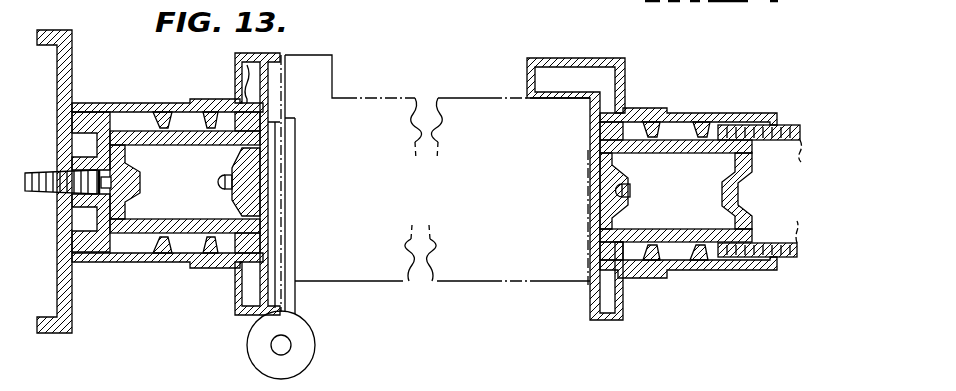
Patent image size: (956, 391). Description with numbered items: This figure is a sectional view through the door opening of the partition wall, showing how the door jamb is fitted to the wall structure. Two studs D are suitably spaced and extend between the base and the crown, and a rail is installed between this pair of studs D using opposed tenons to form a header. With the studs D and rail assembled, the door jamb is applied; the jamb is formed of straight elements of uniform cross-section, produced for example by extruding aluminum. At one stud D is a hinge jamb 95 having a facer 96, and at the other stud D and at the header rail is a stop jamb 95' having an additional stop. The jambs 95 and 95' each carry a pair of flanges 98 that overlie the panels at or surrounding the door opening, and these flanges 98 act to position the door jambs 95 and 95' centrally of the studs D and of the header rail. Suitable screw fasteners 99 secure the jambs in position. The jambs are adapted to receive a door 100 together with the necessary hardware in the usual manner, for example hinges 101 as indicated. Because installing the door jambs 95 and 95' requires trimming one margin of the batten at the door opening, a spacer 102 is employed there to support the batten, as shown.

The hinge jamb 95 is at (226, 187).
The stop jamb 95' is at (591, 205).
The facer 96 is at (265, 222).
The flanges 98 is at (210, 102).
The screw fasteners 99 is at (226, 180).
The door 100 is at (393, 282).
The hinges 101 is at (314, 357).
The spacer 102 is at (245, 70).
The stud D is at (138, 241).